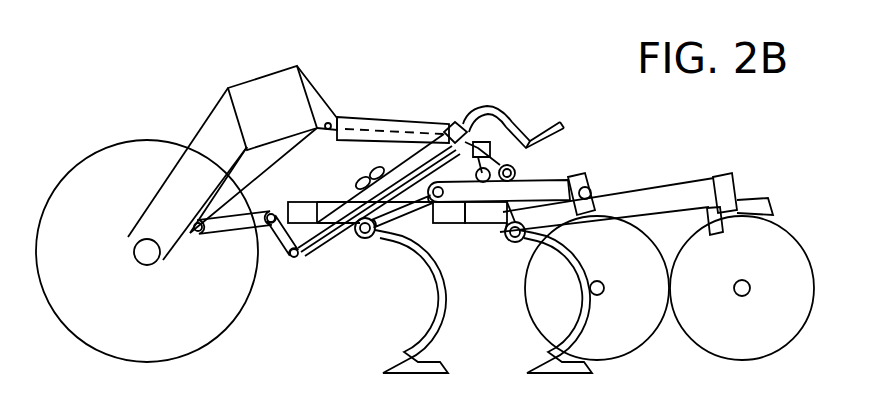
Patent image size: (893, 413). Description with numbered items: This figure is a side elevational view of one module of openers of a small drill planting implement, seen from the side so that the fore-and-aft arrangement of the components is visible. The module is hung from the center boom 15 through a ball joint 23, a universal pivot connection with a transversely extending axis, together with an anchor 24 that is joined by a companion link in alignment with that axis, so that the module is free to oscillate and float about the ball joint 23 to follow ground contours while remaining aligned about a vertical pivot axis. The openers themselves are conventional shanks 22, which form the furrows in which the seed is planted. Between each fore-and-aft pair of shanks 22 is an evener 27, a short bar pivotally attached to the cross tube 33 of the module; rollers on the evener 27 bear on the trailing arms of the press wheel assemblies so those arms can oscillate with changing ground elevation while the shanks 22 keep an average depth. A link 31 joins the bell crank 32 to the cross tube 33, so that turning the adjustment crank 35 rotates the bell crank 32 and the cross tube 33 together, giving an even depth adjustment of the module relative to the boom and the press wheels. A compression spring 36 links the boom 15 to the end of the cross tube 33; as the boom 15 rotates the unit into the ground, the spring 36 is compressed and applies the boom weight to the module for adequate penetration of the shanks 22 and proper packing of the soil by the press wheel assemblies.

The center boom 15 is at (265, 88).
The shank 22 is at (448, 306).
The ball joint 23 is at (198, 234).
The anchor 24 is at (198, 234).
The evener 27 is at (538, 181).
The link 31 is at (324, 234).
The bell crank 32 is at (530, 132).
The cross tube 33 is at (460, 122).
The adjustment crank 35 is at (492, 108).
The compression spring 36 is at (373, 122).